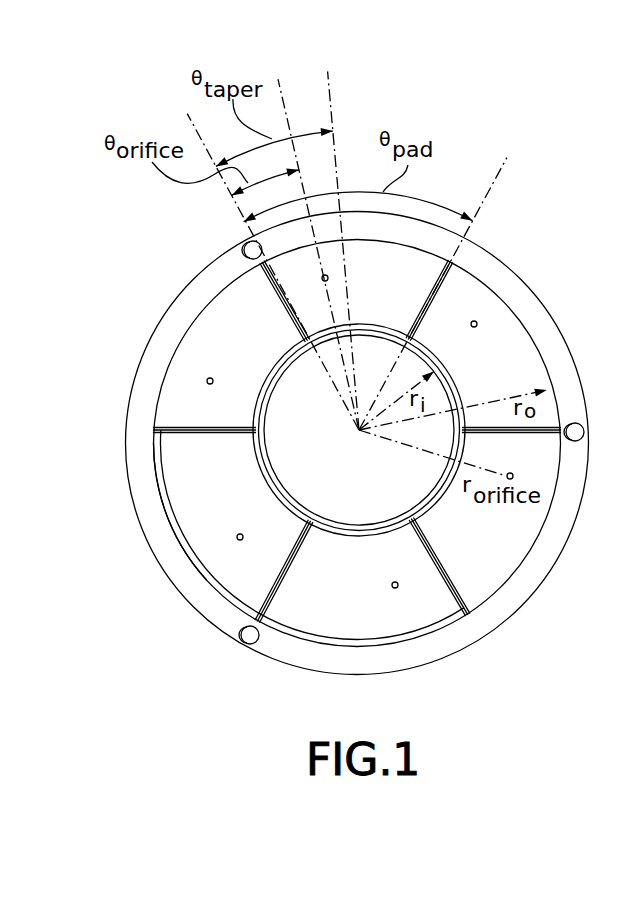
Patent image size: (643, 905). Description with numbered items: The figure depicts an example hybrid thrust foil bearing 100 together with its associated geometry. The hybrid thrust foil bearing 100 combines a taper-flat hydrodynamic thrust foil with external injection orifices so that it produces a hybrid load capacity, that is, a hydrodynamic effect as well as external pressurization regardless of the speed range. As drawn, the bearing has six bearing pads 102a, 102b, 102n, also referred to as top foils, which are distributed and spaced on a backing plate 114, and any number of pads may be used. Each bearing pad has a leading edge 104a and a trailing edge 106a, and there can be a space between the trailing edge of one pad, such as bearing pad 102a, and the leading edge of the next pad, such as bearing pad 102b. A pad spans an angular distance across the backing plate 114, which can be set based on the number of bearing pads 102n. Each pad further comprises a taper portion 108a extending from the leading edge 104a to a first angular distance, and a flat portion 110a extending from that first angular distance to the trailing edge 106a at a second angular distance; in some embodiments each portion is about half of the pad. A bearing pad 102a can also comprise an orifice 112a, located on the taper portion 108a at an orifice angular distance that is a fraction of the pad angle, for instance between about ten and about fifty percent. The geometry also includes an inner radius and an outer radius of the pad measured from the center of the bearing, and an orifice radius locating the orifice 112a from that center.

The hydrostatic bearing 100 is at (157, 263).
The bearing pad 102a is at (195, 508).
The bearing pad 102b is at (197, 355).
The bearing pad 102n is at (328, 620).
The leading edge 104a is at (262, 598).
The trailing edge 106a is at (190, 434).
The taper portion 108a is at (218, 572).
The flat portion 110a is at (177, 488).
The orifice 112a is at (237, 537).
The backing plate 114 is at (553, 318).